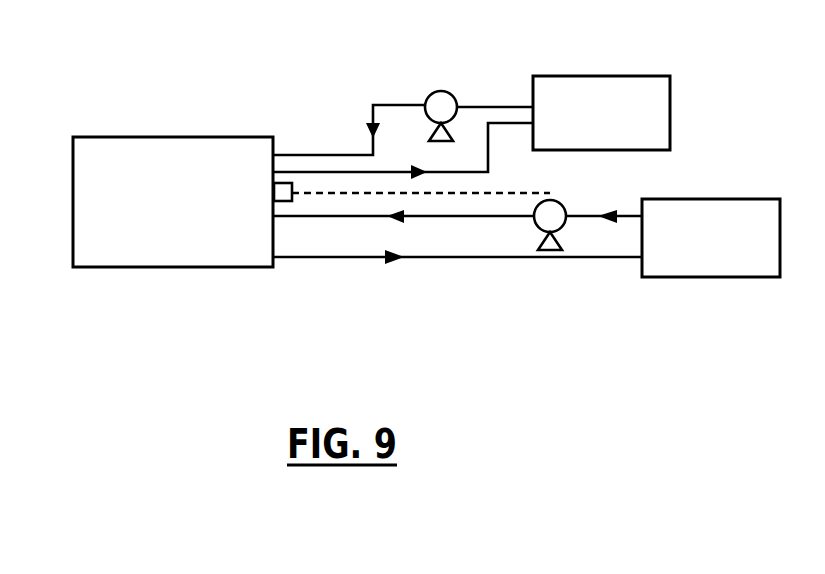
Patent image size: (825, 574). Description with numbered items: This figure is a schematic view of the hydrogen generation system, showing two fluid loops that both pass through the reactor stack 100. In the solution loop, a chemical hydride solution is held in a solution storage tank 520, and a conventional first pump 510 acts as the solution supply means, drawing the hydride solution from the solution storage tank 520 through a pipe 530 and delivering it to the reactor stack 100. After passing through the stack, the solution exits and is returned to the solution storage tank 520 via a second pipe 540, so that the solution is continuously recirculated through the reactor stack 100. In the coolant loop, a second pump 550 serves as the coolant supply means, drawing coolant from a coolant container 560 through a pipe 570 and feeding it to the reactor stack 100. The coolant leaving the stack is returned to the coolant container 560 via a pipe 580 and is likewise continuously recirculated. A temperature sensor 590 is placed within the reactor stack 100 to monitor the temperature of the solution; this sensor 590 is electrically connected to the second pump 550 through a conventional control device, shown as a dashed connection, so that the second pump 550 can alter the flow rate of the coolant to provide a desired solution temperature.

The reactor stack 100 is at (153, 137).
The first pump 510 is at (441, 91).
The solution storage tank 520 is at (567, 76).
The pipe 530 is at (369, 115).
The pipe 540 is at (488, 157).
The second pump 550 is at (562, 200).
The coolant container 560 is at (707, 277).
The pipe 570 is at (574, 219).
The pipe 580 is at (410, 258).
The temperature sensor 590 is at (293, 201).